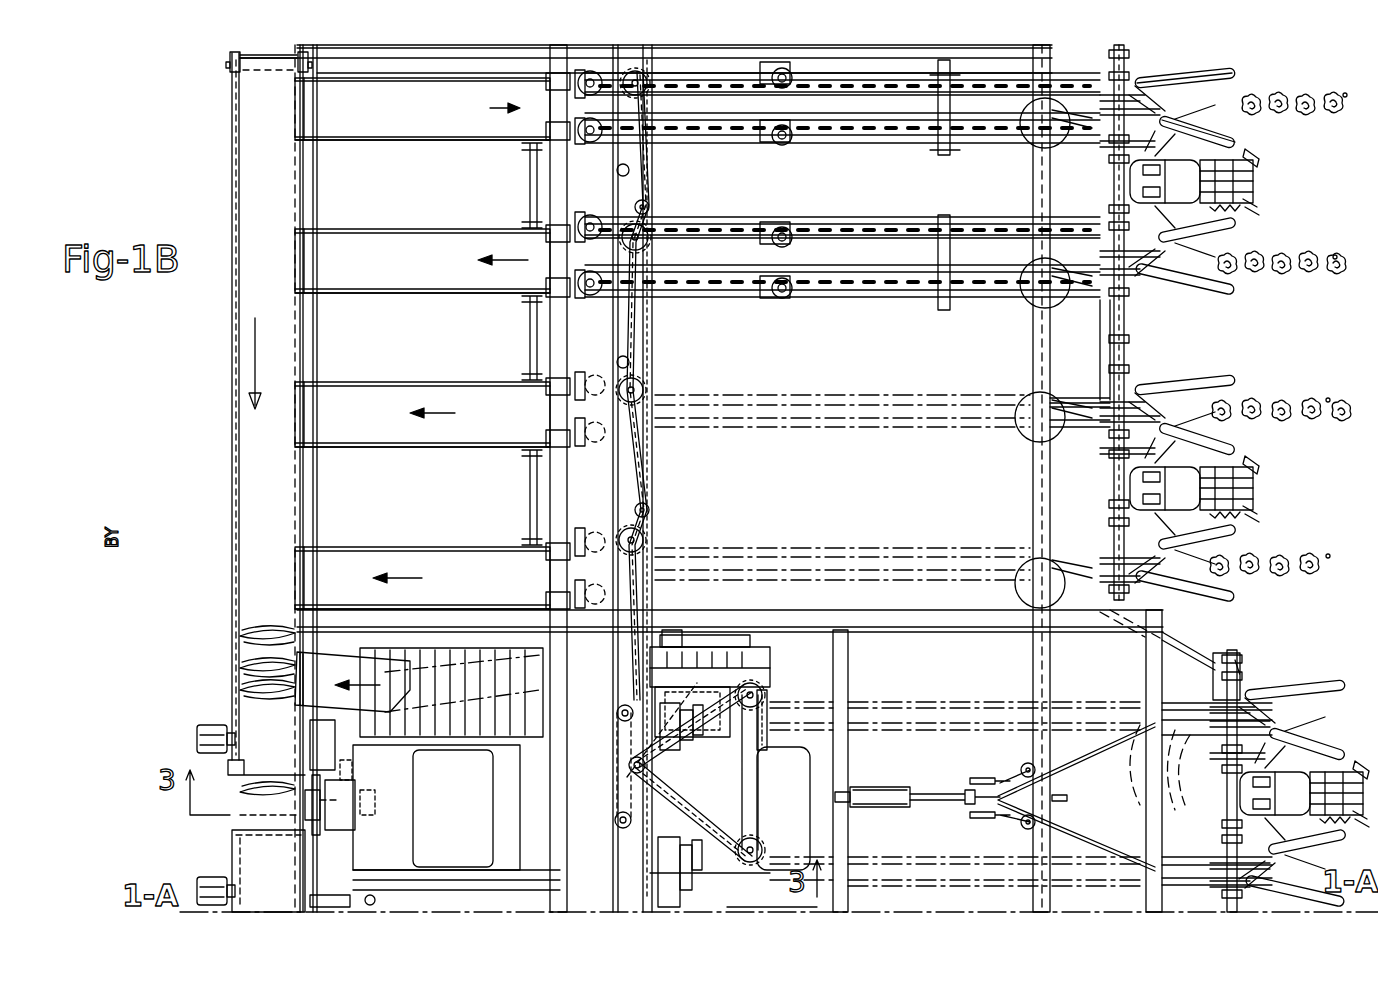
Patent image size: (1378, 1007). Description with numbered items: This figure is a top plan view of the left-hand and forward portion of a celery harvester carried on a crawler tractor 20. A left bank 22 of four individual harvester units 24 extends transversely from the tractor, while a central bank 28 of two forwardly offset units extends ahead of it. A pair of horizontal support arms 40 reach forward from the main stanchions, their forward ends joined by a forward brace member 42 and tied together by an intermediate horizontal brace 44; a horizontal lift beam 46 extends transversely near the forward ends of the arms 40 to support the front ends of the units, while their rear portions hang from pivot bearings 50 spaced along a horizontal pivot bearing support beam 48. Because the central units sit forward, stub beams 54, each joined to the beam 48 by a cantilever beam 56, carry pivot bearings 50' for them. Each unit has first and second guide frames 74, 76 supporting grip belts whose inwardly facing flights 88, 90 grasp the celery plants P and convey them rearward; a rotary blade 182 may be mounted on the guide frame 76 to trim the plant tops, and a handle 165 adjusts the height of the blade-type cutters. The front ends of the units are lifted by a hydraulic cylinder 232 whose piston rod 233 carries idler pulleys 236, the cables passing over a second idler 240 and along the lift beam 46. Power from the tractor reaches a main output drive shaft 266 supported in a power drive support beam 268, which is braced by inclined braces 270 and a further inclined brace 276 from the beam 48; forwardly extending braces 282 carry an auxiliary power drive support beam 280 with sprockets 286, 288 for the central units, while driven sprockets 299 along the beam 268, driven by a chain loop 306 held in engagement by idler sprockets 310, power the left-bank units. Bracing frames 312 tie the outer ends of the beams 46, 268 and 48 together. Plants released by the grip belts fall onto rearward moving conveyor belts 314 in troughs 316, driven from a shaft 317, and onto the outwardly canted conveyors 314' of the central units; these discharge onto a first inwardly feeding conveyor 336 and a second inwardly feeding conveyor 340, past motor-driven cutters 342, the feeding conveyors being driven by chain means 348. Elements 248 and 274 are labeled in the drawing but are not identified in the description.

The crawler tractor 20 is at (785, 762).
The left bank of harvester units 22 is at (1305, 68).
The harvester unit 24 is at (1258, 100).
The product P is at (1345, 93).
The central bank of harvester units 28 is at (1289, 680).
The horizontal support arms 40 is at (935, 612).
The forward brace member 42 is at (1152, 767).
The intermediate horizontal brace 44 is at (848, 676).
The horizontal lift beam 46 is at (1050, 486).
The horizontal pivot bearing support beam 48 is at (557, 176).
The pivot bearings 50 is at (683, 335).
The pivot bearings 50' is at (709, 787).
The auxiliary pivot bearing support beams 54 is at (660, 750).
The cantilever beam 56 is at (666, 708).
The first guide frame 74 is at (845, 85).
The second guide frame 76 is at (897, 100).
The inwardly facing flight 88 is at (1200, 91).
The inwardly facing flight 90 is at (1225, 123).
The adjustment handle 165 is at (1250, 503).
The rotary blade 182 is at (1020, 440).
The hydraulic cylinder 232 is at (887, 787).
The piston rod 233 is at (938, 818).
The idler pulleys 236 is at (993, 772).
The second idler 240 is at (1017, 765).
The gripper shaft 248 is at (1092, 110).
The main power output drive shaft 266 is at (645, 770).
The power drive support beam 268 is at (647, 488).
The inclined braces 270 is at (510, 624).
The drive housing 274 is at (547, 757).
The inclined brace member 276 is at (550, 853).
The auxiliary power drive support beam 280 is at (755, 758).
The forwardly extending brace 282 is at (765, 662).
The sprocket 286 is at (760, 686).
The sprocket 288 is at (755, 843).
The driven sprockets 299 is at (648, 85).
The chain loop 306 is at (650, 330).
The idler sprockets 310 is at (650, 204).
The bracing frames 312 is at (497, 57).
The auxiliary rearward moving conveyor belts 314 is at (422, 343).
The conveyors of central units 314' is at (325, 708).
The trough means 316 is at (410, 547).
The shaft 317 is at (527, 514).
The first inwardly feeding conveyor 336 is at (235, 506).
The second inwardly feeding conveyor 340 is at (236, 850).
The cutters 342 is at (210, 722).
The chain means 348 is at (310, 808).